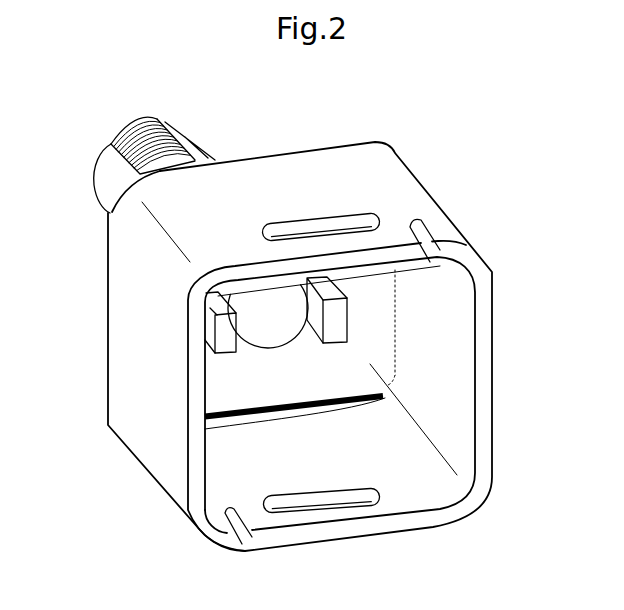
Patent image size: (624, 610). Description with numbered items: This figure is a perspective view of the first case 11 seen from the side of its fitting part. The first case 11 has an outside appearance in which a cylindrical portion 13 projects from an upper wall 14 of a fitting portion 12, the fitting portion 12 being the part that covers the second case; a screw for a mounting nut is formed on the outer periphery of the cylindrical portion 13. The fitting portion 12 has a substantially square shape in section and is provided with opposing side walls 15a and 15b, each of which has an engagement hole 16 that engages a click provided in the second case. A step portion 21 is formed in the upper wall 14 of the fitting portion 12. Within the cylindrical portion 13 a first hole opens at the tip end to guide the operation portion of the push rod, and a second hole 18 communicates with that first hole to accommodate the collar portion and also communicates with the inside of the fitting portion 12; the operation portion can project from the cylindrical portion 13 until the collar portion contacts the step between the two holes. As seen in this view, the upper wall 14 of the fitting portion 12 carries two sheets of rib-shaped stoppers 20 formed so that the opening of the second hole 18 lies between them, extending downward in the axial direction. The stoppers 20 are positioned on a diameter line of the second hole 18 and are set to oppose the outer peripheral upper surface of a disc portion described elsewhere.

The first case 11 is at (386, 140).
The fitting portion 12 is at (415, 168).
The cylindrical portion 13 is at (103, 167).
The upper wall 14 is at (390, 386).
The side wall 15a is at (416, 197).
The side wall 15b is at (410, 507).
The engagement hole 16 is at (321, 220).
The second hole 18 is at (280, 338).
The rib-shaped stoppers 20 is at (346, 312).
The step portion 21 is at (236, 413).